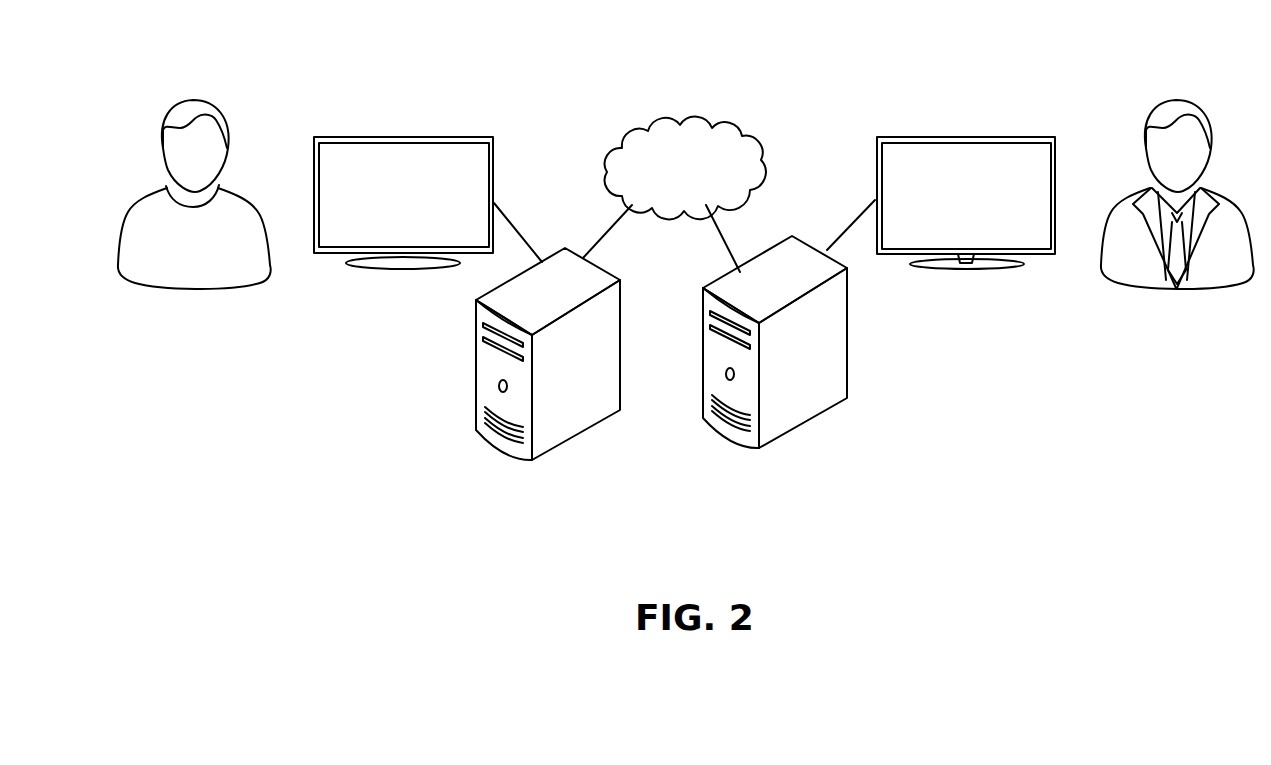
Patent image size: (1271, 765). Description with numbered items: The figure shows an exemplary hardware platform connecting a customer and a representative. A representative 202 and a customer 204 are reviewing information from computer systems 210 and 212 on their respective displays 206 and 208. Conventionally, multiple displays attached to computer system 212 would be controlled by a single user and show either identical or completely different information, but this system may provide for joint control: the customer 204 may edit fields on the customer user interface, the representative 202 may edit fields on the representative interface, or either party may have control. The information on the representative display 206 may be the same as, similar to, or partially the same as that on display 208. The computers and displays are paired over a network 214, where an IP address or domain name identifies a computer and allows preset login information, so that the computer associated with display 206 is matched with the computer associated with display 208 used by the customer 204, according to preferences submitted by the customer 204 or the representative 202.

The representative 202 is at (1193, 288).
The customer 204 is at (243, 288).
The representative display 206 is at (973, 272).
The display 208 is at (353, 137).
The computer system 210 is at (777, 440).
The computer system 212 is at (548, 453).
The network 214 is at (662, 127).